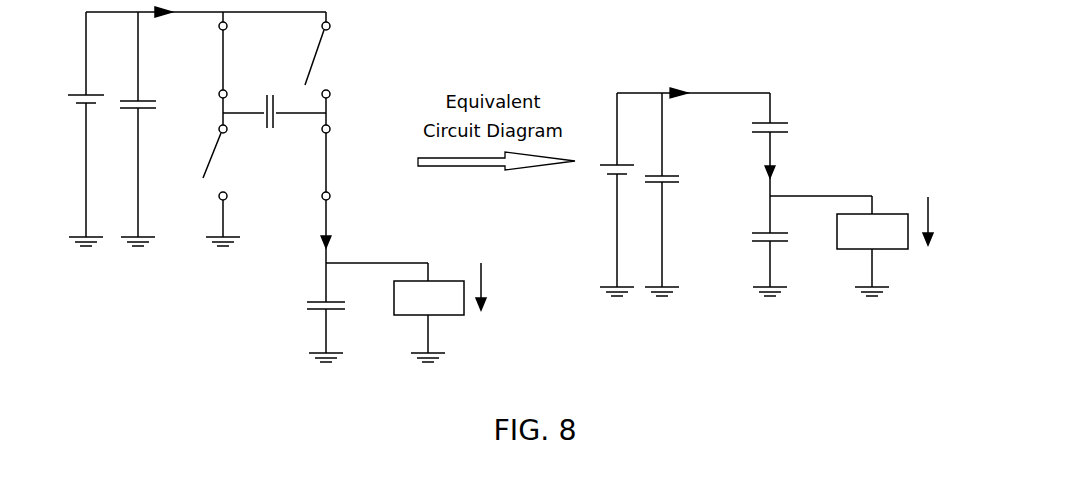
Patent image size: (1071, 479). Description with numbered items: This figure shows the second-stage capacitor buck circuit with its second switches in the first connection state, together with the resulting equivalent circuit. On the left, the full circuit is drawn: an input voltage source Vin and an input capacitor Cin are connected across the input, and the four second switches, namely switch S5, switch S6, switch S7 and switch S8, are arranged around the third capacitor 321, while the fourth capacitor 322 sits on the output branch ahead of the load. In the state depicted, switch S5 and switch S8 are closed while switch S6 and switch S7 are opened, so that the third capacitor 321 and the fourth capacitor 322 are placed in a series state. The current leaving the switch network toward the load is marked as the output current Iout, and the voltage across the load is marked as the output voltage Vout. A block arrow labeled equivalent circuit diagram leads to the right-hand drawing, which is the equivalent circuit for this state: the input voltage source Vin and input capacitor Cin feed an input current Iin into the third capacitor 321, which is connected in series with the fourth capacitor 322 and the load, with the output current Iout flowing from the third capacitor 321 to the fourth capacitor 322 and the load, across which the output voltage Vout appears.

The third capacitor 321 is at (275, 118).
The fourth capacitor 322 is at (343, 305).
The switch S5 is at (237, 67).
The switch S6 is at (327, 67).
The switch S7 is at (228, 156).
The switch S8 is at (340, 156).
The input voltage source Vin is at (361, 125).
The input capacitor Cin is at (408, 131).
The output current Iout is at (571, 209).
The output voltage Vout is at (730, 253).
The input current Iin is at (687, 80).